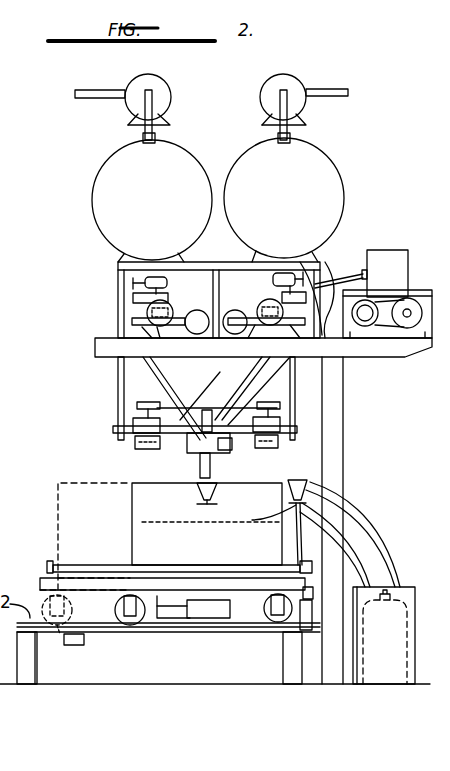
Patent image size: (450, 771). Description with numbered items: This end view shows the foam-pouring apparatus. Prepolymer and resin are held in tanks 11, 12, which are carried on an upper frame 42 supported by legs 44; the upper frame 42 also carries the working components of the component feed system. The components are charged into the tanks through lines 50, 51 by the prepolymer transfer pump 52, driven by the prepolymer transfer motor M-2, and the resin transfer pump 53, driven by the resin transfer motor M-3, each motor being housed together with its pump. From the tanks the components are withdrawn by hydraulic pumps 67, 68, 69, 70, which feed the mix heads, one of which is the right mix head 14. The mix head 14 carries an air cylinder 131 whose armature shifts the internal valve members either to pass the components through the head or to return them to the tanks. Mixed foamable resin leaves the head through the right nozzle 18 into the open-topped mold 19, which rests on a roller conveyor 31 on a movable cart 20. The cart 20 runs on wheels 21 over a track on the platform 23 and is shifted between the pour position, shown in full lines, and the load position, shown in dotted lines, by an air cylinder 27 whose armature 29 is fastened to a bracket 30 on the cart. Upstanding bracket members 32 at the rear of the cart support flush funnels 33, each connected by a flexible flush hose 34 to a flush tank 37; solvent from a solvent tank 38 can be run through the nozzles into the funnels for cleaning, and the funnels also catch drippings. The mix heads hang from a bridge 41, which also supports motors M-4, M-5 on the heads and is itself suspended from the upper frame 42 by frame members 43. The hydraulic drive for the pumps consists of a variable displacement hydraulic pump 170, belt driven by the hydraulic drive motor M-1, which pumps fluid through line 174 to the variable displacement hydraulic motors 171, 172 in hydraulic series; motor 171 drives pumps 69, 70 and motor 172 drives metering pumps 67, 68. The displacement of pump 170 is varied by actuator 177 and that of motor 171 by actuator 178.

The tank 11 is at (92, 194).
The tank 12 is at (333, 173).
The right mix head 14 is at (186, 450).
The right nozzle 18 is at (202, 468).
The mold 19 is at (170, 518).
The movable cart 20 is at (116, 578).
The wheels 21 is at (86, 641).
The platform or frame 23 is at (120, 633).
The air cylinder 27 is at (230, 640).
The air cylinder armature 29 is at (196, 624).
The bracket 30 is at (165, 621).
The roller conveyor 31 is at (203, 570).
The upstanding bracket members 32 is at (289, 527).
The flush nozzles 33 is at (220, 492).
The flush hose 34 is at (305, 534).
The flush tank 37 is at (403, 586).
The solvent tank 38 is at (381, 688).
The bridge 41 is at (113, 430).
The upper frame 42 is at (95, 348).
The frame members 43 is at (118, 386).
The legs 44 is at (345, 455).
The line 50 is at (105, 100).
The line 51 is at (331, 96).
The prepolymer transfer pump 52 is at (185, 97).
The resin transfer pump 53 is at (326, 97).
The metering pump 67 is at (118, 306).
The metering pump 68 is at (165, 340).
The pump 69 is at (285, 338).
The pump 70 is at (318, 309).
The air cylinder 131 is at (150, 445).
The variable displacement hydraulic pump 170 is at (363, 328).
The variable displacement hydraulic motor 171 is at (267, 301).
The variable displacement hydraulic motor 172 is at (190, 292).
The line 174 is at (335, 282).
The actuator 177 is at (387, 273).
The actuator 178 is at (264, 262).
The hydraulic drive motor M-1 is at (412, 328).
The prepolymer transfer motor M-2 is at (157, 84).
The resin transfer motor M-3 is at (298, 86).
The motor M-4 is at (290, 425).
The motor M-5 is at (133, 420).